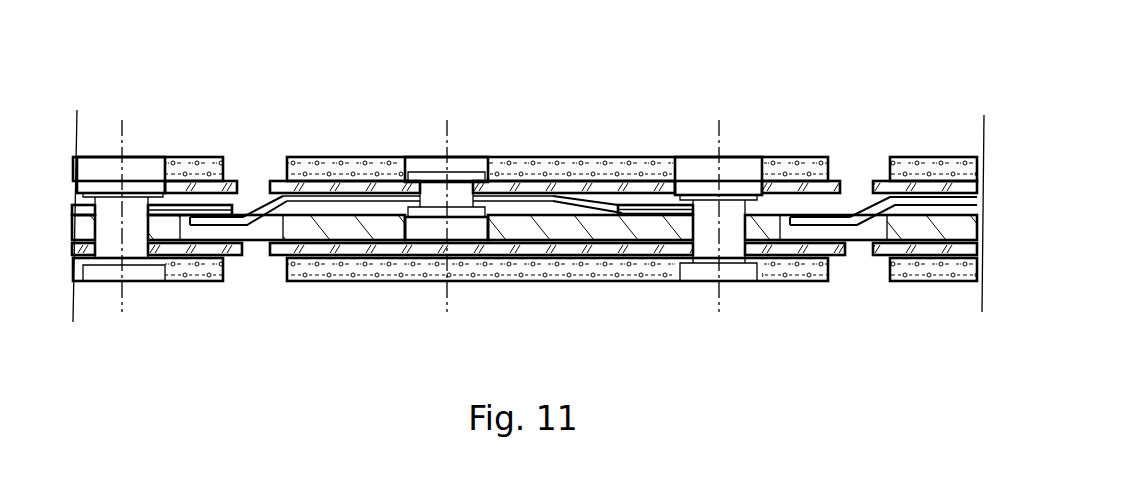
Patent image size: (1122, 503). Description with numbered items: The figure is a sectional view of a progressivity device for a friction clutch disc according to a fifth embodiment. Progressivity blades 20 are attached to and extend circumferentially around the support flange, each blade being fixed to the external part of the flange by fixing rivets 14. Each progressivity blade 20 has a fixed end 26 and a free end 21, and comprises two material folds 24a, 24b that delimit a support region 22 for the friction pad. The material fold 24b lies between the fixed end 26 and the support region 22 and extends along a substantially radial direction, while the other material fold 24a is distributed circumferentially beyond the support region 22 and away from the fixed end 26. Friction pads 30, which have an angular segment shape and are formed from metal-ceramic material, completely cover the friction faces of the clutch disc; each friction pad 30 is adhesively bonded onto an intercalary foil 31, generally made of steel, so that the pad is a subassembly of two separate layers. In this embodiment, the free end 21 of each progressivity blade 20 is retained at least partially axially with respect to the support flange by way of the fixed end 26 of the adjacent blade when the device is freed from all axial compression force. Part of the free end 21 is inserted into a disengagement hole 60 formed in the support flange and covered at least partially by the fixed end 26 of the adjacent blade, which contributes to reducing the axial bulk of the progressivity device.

The fixing rivet 14 is at (738, 203).
The progressivity blade 20 is at (323, 200).
The free end 21 is at (198, 217).
The support region 22 is at (507, 200).
The material fold 24a is at (873, 213).
The material fold 24b is at (577, 203).
The fixed end 26 is at (667, 205).
The friction pad 30 is at (352, 172).
The intercalary foil 31 is at (662, 265).
The disengagement hole 60 is at (257, 230).